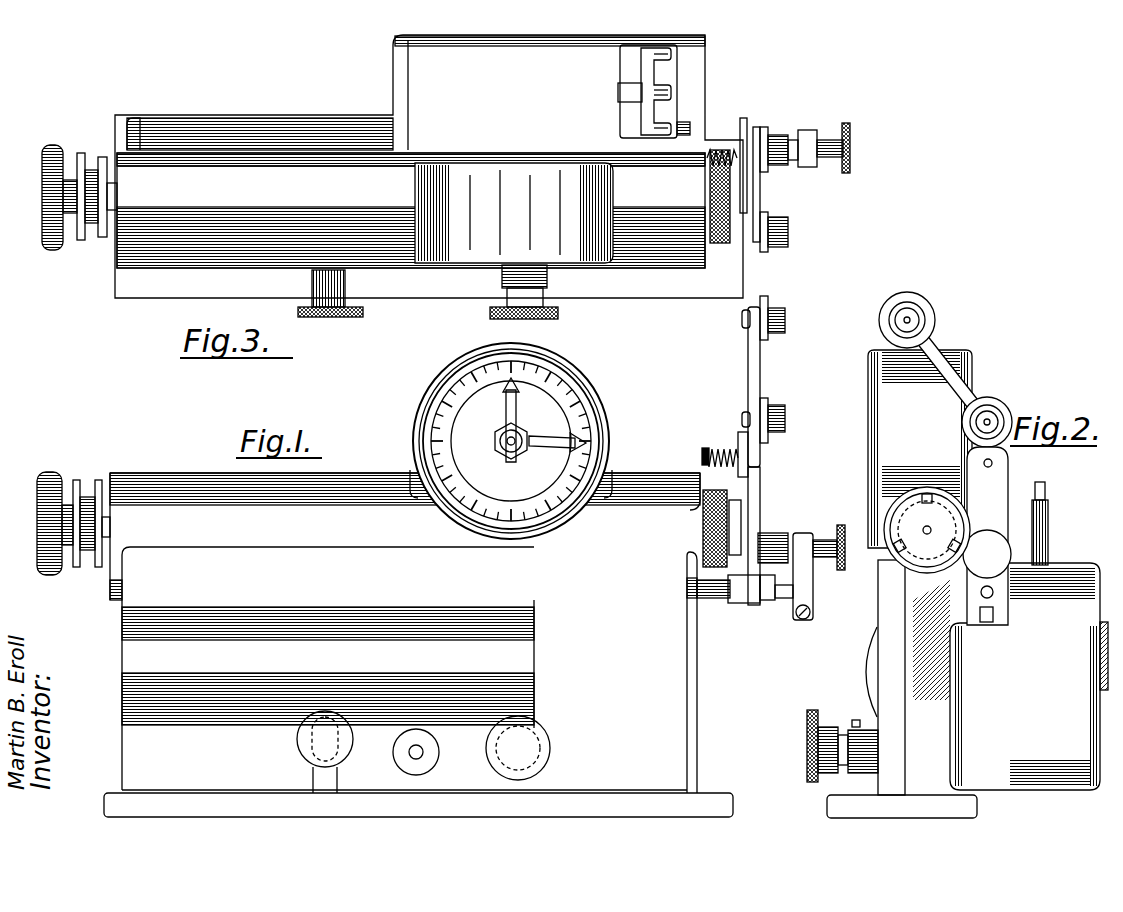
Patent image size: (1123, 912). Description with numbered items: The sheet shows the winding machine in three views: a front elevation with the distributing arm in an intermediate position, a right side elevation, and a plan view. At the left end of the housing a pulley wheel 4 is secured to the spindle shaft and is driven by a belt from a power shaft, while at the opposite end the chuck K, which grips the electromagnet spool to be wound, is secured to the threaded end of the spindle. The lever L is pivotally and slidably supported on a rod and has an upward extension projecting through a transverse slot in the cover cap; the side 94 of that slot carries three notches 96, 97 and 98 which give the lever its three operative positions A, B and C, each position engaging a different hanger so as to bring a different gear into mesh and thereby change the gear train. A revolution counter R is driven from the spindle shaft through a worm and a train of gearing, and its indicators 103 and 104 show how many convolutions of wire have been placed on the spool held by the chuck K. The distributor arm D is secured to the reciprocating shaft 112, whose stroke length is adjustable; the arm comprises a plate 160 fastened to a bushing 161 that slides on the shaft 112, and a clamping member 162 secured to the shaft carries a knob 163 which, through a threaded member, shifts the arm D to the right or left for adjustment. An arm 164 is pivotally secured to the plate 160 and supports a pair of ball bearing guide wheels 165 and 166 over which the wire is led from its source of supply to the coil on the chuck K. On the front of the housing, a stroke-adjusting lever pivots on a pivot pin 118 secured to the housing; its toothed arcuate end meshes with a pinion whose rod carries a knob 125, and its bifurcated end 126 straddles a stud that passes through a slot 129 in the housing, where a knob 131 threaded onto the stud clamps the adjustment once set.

In FIG. 3, the pulley wheel 4 is at (86, 152).
In FIG. 1, the pulley wheel 4 is at (73, 514).
In FIG. 3, the notch 96 is at (668, 50).
In FIG. 3, the side of the slot 94 is at (656, 91).
In FIG. 3, the operative position A is at (672, 54).
In FIG. 3, the operative position B is at (672, 89).
In FIG. 3, the operative position C is at (674, 113).
In FIG. 3, the notch 97 is at (672, 94).
In FIG. 3, the notch 98 is at (672, 127).
In FIG. 3, the lever L is at (636, 88).
In FIG. 2, the lever L is at (1047, 503).
In FIG. 3, the chuck K is at (721, 243).
In FIG. 1, the chuck K is at (715, 490).
In FIG. 2, the chuck K is at (925, 529).
In FIG. 3, the ball bearing guide wheel 166 is at (771, 130).
In FIG. 1, the ball bearing guide wheel 166 is at (776, 434).
In FIG. 2, the ball bearing guide wheel 166 is at (996, 398).
In FIG. 3, the knob 163 is at (856, 138).
In FIG. 1, the knob 163 is at (845, 568).
In FIG. 2, the knob 163 is at (995, 553).
In FIG. 3, the ball bearing guide wheel 165 is at (774, 223).
In FIG. 1, the ball bearing guide wheel 165 is at (768, 304).
In FIG. 2, the ball bearing guide wheel 165 is at (922, 300).
In FIG. 3, the knob 131 is at (330, 303).
In FIG. 1, the knob 131 is at (300, 747).
In FIG. 2, the knob 131 is at (812, 710).
In FIG. 3, the knob 125 is at (500, 313).
In FIG. 2, the knob 125 is at (807, 753).
In FIG. 1, the indicator 103 is at (530, 386).
In FIG. 1, the revolution counter R is at (530, 430).
In FIG. 1, the indicator 104 is at (572, 446).
In FIG. 1, the arm 164 is at (760, 383).
In FIG. 2, the arm 164 is at (950, 352).
In FIG. 1, the distributor arm D is at (766, 406).
In FIG. 1, the plate 160 is at (761, 510).
In FIG. 2, the plate 160 is at (1008, 482).
In FIG. 1, the clamping member 162 is at (812, 606).
In FIG. 1, the reciprocating shaft 112 is at (712, 599).
In FIG. 1, the bushing 161 is at (771, 603).
In FIG. 1, the slot 129 is at (342, 762).
In FIG. 1, the pivot pin 118 is at (424, 753).
In FIG. 1, the end of the lever 126 is at (545, 740).